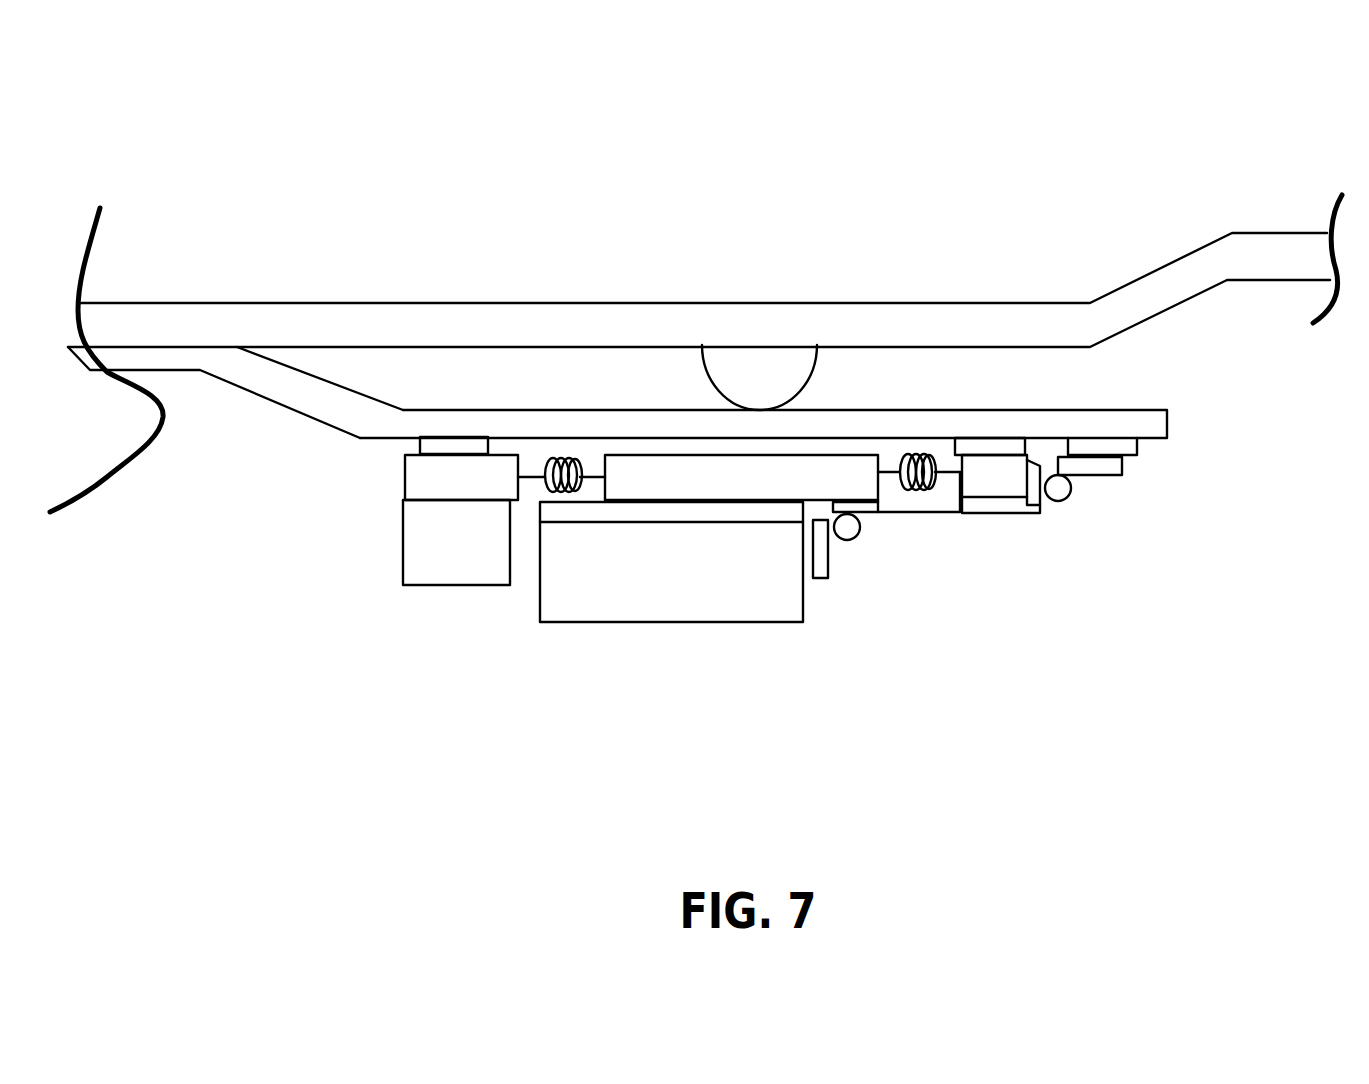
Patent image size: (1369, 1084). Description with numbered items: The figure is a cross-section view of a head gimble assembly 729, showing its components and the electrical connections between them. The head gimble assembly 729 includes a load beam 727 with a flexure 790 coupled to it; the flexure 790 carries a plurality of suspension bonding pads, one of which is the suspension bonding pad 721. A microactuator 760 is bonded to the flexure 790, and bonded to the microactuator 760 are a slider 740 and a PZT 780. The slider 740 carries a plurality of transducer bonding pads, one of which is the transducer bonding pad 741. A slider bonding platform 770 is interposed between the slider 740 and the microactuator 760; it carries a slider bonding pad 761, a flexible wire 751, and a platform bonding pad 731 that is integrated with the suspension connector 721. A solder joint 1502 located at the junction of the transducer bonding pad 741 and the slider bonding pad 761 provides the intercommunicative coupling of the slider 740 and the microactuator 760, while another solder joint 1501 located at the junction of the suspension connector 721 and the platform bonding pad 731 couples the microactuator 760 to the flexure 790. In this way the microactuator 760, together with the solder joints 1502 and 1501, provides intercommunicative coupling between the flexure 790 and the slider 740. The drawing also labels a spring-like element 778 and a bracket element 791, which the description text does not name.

The head gimble assembly 729 is at (990, 86).
The load beam 727 is at (432, 322).
The flexure 790 is at (1152, 422).
The bracket 791 is at (1113, 443).
The suspension bonding pad 721 is at (1107, 465).
The solder joint 1501 is at (1072, 490).
The microactuator 760 is at (428, 477).
The PZT 780 is at (428, 540).
The spring 778 is at (548, 480).
The slider 740 is at (625, 602).
The slider bonding platform 770 is at (717, 502).
The slider bonding pad 761 is at (862, 482).
The flexible wire 751 is at (943, 510).
The platform bonding pad 731 is at (1027, 505).
The transducer bonding pad 741 is at (820, 578).
The solder joint 1502 is at (850, 540).